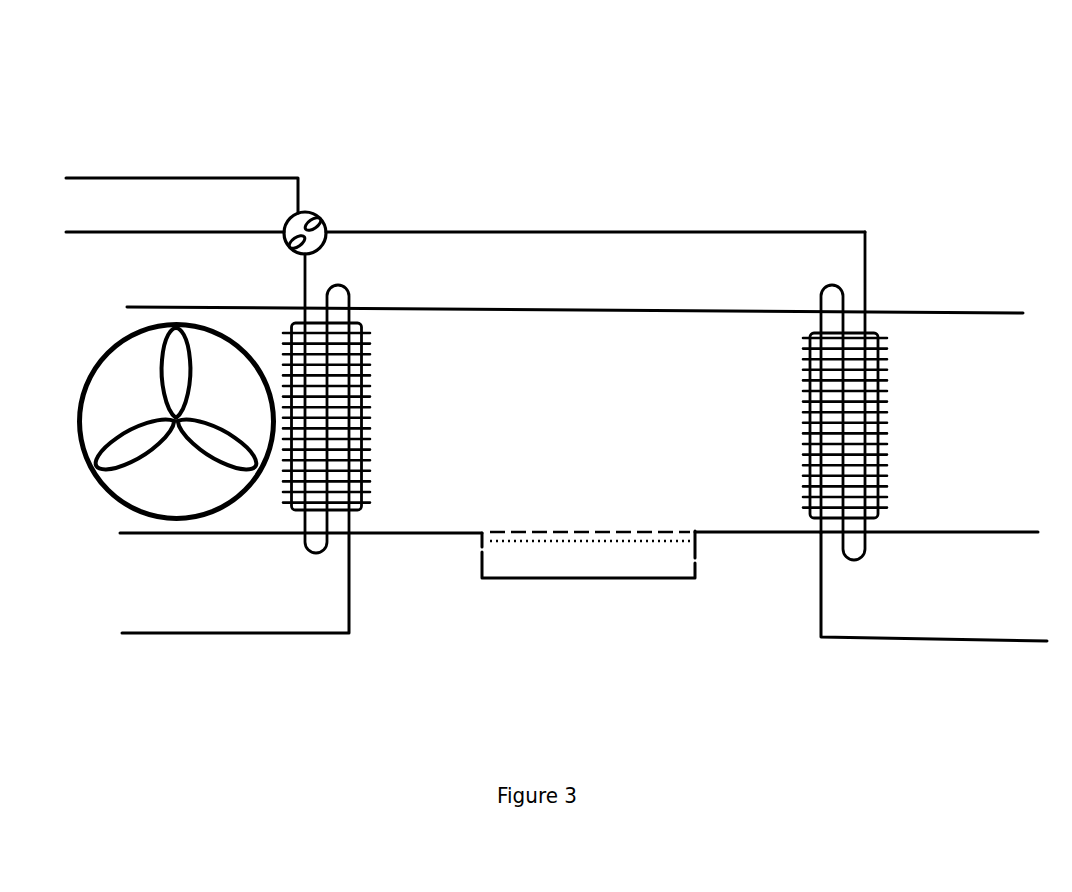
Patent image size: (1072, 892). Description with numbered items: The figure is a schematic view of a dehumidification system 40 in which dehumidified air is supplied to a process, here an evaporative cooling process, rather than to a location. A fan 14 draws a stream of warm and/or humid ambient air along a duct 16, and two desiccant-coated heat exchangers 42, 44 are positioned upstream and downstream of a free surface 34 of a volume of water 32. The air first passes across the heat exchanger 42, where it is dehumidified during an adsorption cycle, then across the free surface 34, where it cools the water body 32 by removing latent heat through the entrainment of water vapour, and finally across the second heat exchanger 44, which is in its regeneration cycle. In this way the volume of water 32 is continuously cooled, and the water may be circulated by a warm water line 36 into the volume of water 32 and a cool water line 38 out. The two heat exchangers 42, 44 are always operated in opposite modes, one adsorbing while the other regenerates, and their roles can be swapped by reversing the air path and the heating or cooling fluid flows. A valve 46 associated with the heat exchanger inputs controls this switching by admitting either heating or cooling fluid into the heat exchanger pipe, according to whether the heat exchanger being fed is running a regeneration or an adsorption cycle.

The fan 14 is at (82, 372).
The duct 16 is at (484, 308).
The volume of water 32 is at (587, 580).
The free surface 34 is at (624, 540).
The warm water line 36 is at (458, 602).
The cool water line 38 is at (728, 618).
The system 40 is at (852, 126).
The heat exchanger 42 is at (372, 385).
The second heat exchanger 44 is at (800, 378).
The valve 46 is at (328, 218).